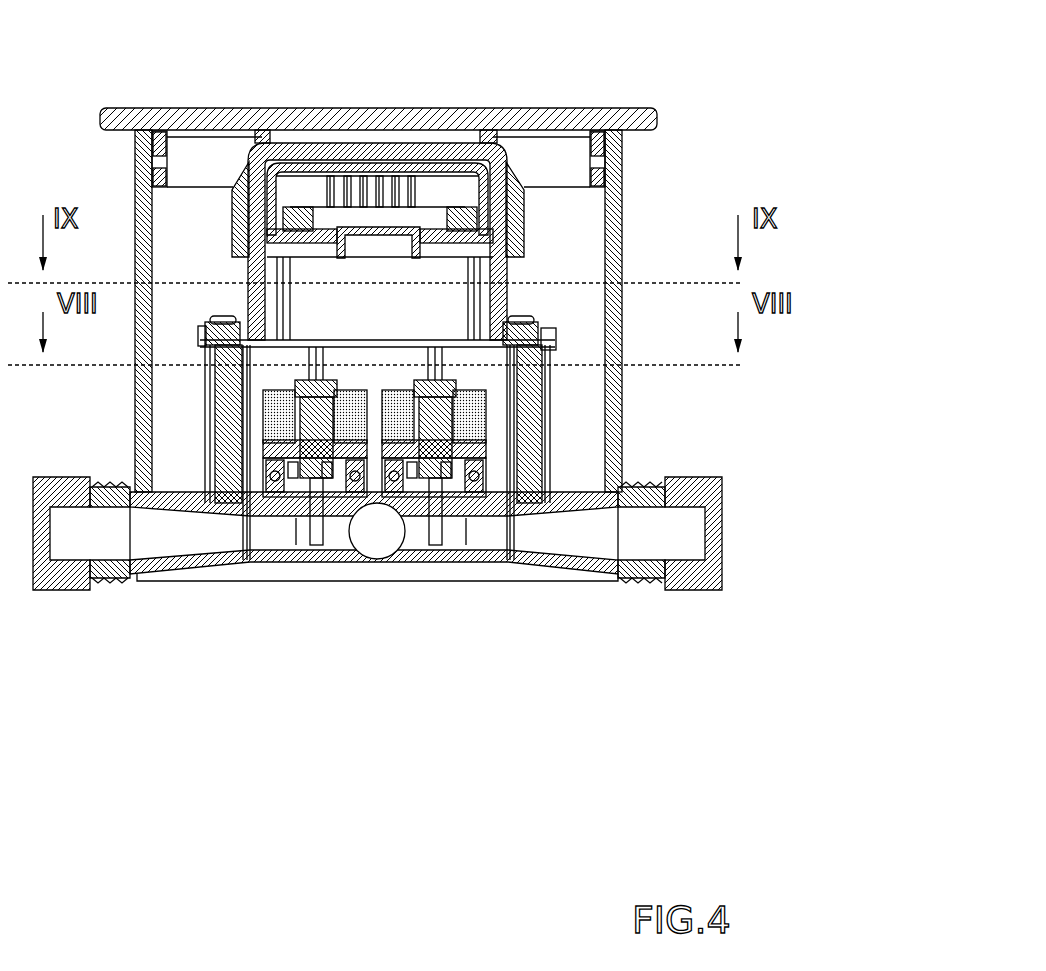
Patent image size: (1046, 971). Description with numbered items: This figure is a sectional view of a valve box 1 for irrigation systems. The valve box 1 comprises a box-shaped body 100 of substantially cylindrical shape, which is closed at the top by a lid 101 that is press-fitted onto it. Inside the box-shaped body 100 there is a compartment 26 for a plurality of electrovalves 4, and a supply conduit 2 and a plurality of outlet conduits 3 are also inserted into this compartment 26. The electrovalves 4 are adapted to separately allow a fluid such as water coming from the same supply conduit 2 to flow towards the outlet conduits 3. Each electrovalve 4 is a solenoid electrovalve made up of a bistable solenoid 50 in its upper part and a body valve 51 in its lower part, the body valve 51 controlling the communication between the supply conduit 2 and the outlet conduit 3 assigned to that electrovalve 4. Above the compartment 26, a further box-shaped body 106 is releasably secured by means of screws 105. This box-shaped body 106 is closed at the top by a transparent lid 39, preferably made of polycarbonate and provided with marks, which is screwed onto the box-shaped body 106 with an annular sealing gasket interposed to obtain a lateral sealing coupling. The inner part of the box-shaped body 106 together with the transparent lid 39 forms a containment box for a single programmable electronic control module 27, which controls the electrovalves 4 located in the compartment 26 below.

The valve box 1 is at (568, 58).
The box-shaped body 100 is at (626, 192).
The lid 101 is at (228, 122).
The box-shaped body 106 is at (255, 297).
The transparent lid 39 is at (515, 205).
The programmable electronic control module 27 is at (420, 270).
The screws 105 is at (232, 333).
The electrovalve 4 is at (339, 366).
The bistable solenoid 50 is at (215, 396).
The compartment 26 is at (212, 455).
The outlet conduit 3 is at (157, 548).
The supply conduit 2 is at (386, 545).
The body valve 51 is at (302, 540).